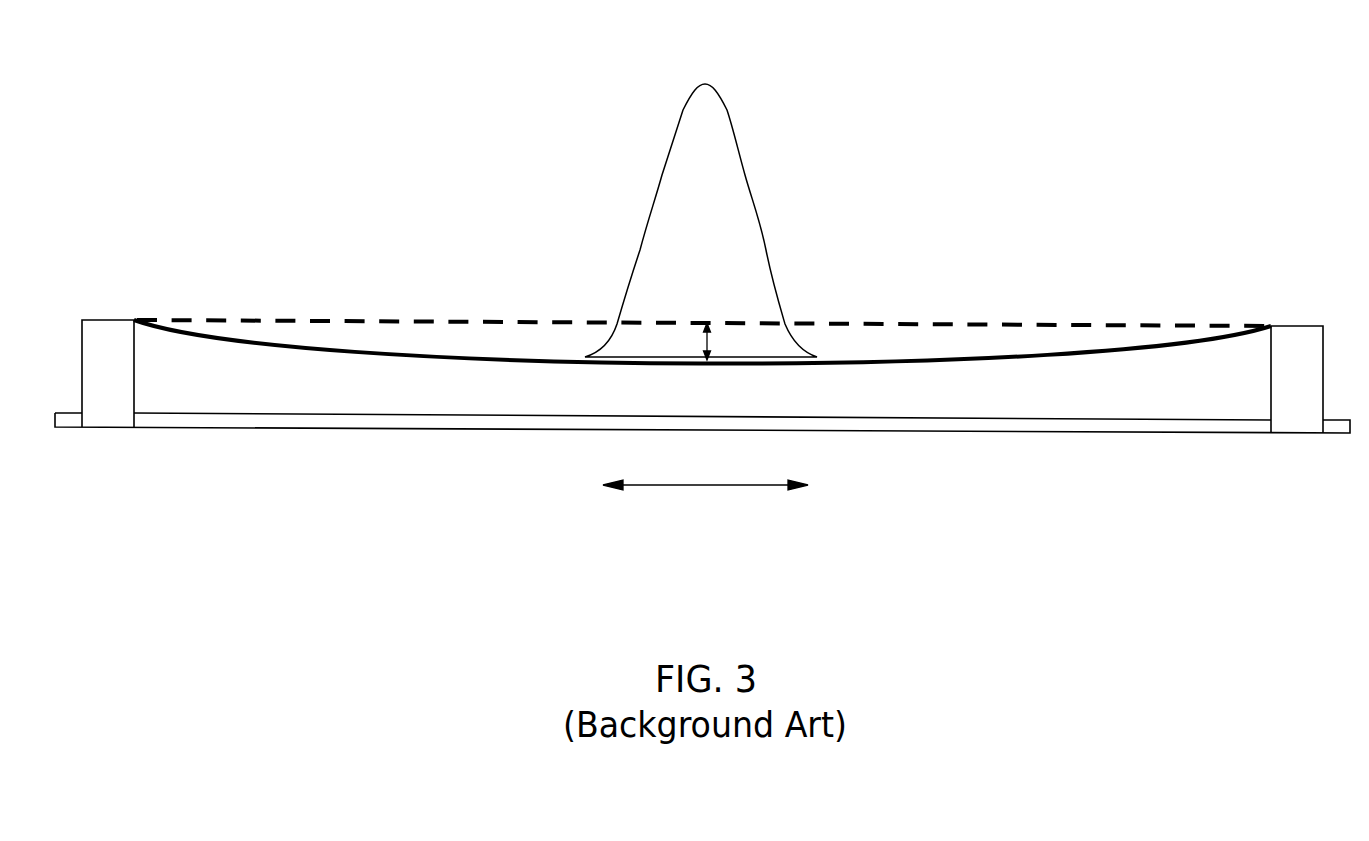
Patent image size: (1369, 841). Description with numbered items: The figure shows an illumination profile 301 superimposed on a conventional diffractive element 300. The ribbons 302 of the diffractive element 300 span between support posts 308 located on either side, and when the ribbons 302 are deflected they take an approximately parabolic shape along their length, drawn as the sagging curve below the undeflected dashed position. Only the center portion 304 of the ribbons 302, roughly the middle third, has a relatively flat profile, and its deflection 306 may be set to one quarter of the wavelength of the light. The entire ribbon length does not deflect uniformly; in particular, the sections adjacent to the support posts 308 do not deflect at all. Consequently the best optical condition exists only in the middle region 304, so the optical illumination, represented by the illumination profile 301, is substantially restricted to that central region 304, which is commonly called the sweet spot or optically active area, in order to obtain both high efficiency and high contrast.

The conventional diffractive element 300 is at (702, 388).
The illumination profile 301 is at (768, 200).
The ribbons 302 is at (275, 347).
The center portion of the ribbons 304 is at (705, 500).
The deflection 306 is at (700, 343).
The support posts 308 is at (107, 404).